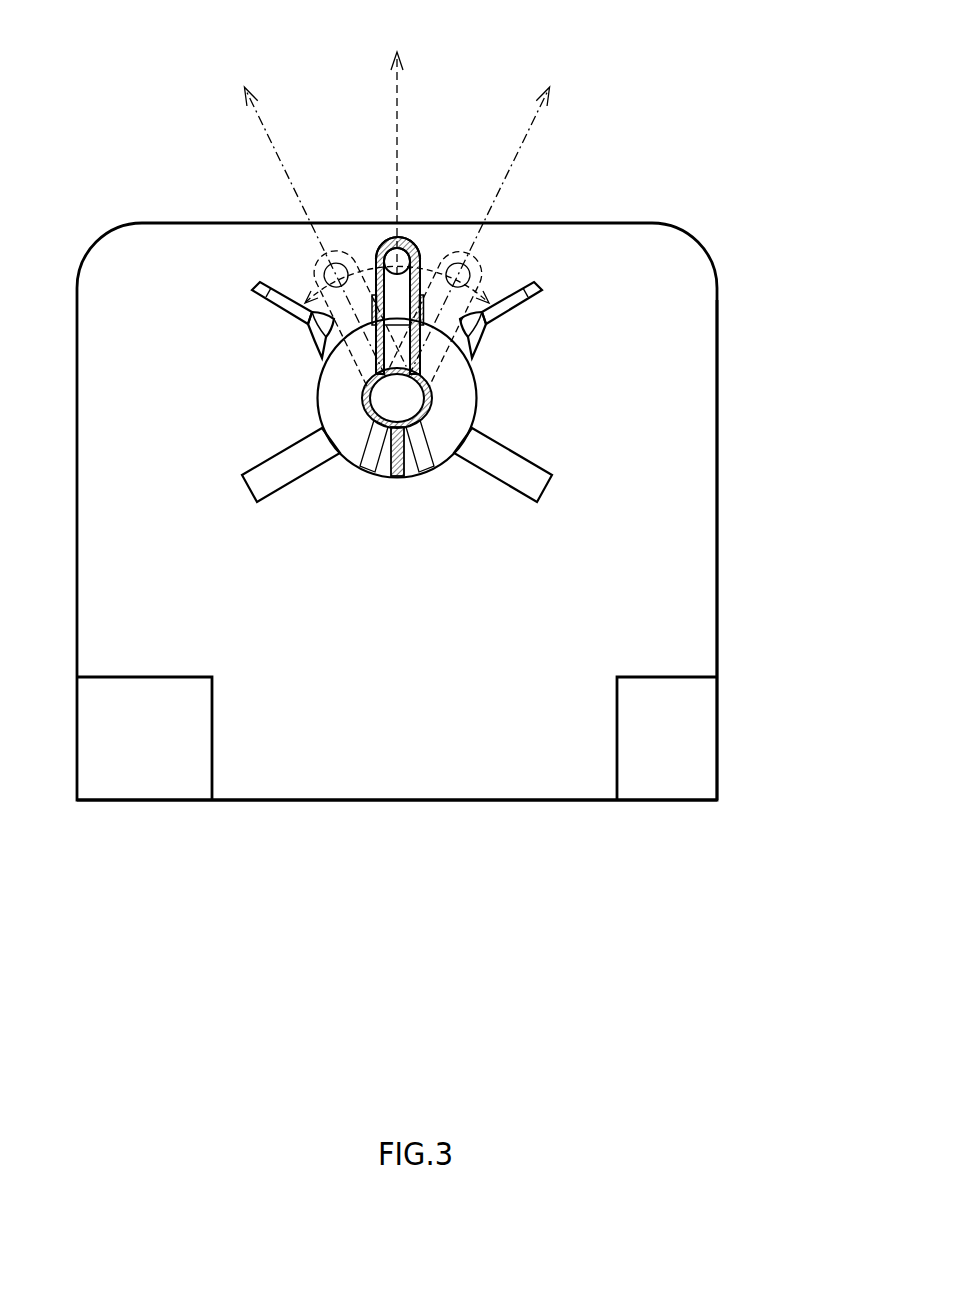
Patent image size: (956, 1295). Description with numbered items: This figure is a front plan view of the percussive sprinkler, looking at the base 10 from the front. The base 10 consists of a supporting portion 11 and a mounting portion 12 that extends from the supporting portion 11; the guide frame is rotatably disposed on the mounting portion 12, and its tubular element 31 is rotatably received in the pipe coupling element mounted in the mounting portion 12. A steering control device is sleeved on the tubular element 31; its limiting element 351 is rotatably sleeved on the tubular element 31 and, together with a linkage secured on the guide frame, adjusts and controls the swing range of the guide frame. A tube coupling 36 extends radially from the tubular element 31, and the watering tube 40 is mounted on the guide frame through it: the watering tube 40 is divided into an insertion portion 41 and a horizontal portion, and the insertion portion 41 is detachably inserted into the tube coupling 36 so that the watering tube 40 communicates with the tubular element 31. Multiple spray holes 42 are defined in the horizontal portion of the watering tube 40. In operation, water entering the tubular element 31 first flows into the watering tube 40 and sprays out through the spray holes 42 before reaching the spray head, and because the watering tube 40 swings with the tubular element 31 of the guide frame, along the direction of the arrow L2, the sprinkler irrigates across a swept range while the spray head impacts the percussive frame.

The base 10 is at (444, 607).
The supporting portion 11 is at (367, 802).
The mounting portion 12 is at (717, 335).
The tubular element 31 is at (362, 397).
The limiting element 351 is at (308, 485).
The tube coupling 36 is at (302, 337).
The watering tube 40 is at (363, 245).
The insertion portion 41 is at (372, 297).
The spray holes 42 is at (394, 238).
The arrow L2 is at (283, 163).